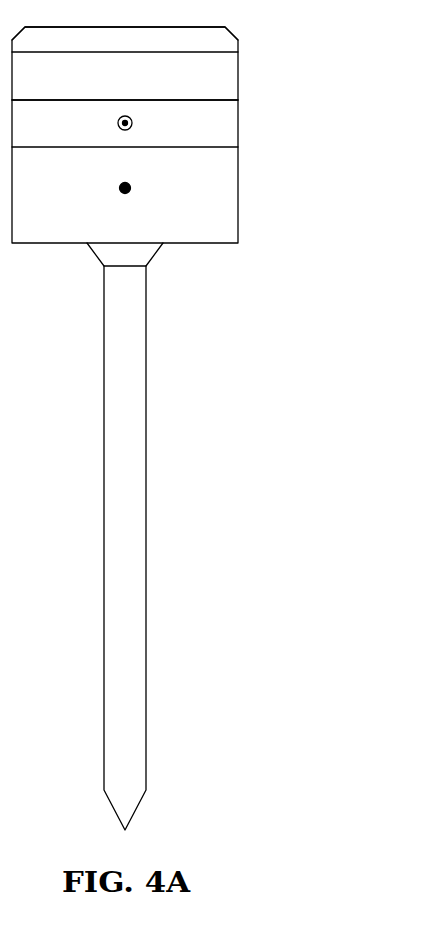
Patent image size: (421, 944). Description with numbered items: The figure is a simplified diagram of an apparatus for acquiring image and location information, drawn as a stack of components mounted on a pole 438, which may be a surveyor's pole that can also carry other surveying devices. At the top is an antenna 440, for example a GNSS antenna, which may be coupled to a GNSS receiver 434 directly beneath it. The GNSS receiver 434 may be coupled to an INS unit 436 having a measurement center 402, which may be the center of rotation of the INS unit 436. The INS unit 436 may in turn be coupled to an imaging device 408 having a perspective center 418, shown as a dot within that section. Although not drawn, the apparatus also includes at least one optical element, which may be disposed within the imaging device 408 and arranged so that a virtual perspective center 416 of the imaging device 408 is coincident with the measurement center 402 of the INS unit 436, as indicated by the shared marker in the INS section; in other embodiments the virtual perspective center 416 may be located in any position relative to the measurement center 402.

The measurement center 402 is at (117, 123).
The imaging device 408 is at (238, 193).
The virtual perspective center 416 is at (133, 123).
The perspective center 418 is at (131, 188).
The GNSS receiver 434 is at (238, 77).
The INS unit 436 is at (238, 126).
The pole 438 is at (146, 357).
The antenna 440 is at (238, 38).